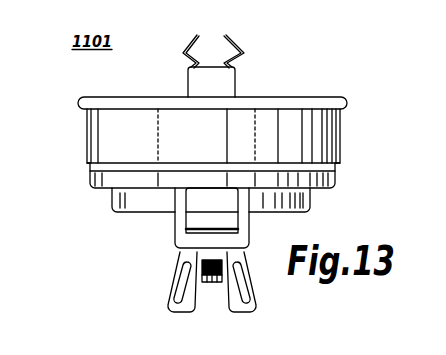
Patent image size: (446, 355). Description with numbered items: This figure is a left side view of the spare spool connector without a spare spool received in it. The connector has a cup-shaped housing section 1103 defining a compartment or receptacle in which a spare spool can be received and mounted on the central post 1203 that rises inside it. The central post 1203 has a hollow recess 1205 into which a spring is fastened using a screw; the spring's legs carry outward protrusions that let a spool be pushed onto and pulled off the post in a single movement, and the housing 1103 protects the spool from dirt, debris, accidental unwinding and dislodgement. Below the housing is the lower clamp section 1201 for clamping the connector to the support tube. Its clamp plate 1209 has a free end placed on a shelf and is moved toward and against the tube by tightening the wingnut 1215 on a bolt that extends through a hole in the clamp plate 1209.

The cup-shaped housing section 1103 is at (335, 148).
The lower clamp section 1201 is at (168, 242).
The central post 1203 is at (235, 87).
The hollow recess 1205 is at (226, 36).
The clamp plate 1209 is at (197, 230).
The wingnut 1215 is at (172, 292).